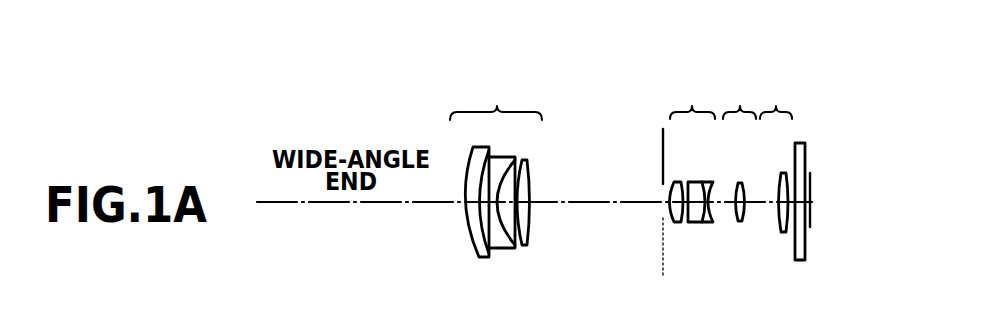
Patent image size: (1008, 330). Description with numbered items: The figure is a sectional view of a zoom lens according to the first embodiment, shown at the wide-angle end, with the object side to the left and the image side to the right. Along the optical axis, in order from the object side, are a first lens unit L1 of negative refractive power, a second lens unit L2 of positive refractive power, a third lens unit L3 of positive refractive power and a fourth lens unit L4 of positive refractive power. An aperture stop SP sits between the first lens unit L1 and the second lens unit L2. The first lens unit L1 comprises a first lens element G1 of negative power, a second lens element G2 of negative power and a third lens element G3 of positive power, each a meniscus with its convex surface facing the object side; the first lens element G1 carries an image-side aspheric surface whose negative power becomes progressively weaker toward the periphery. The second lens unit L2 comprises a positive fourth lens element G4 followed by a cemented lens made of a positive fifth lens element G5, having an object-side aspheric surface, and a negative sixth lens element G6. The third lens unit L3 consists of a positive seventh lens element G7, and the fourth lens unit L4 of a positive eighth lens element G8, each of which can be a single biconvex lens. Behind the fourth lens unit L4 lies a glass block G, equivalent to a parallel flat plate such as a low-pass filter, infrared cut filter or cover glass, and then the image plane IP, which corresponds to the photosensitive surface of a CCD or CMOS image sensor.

The first lens element G1 is at (481, 258).
The second lens element G2 is at (510, 250).
The third lens element G3 is at (525, 246).
The fourth lens element G4 is at (669, 207).
The fifth lens element G5 is at (695, 223).
The sixth lens element G6 is at (710, 223).
The seventh lens element G7 is at (739, 223).
The eighth lens element G8 is at (783, 234).
The first lens unit L1 is at (496, 99).
The second lens unit L2 is at (692, 99).
The third lens unit L3 is at (739, 99).
The fourth lens unit L4 is at (776, 99).
The aperture stop SP is at (657, 132).
The glass block G is at (800, 141).
The image plane IP is at (812, 185).